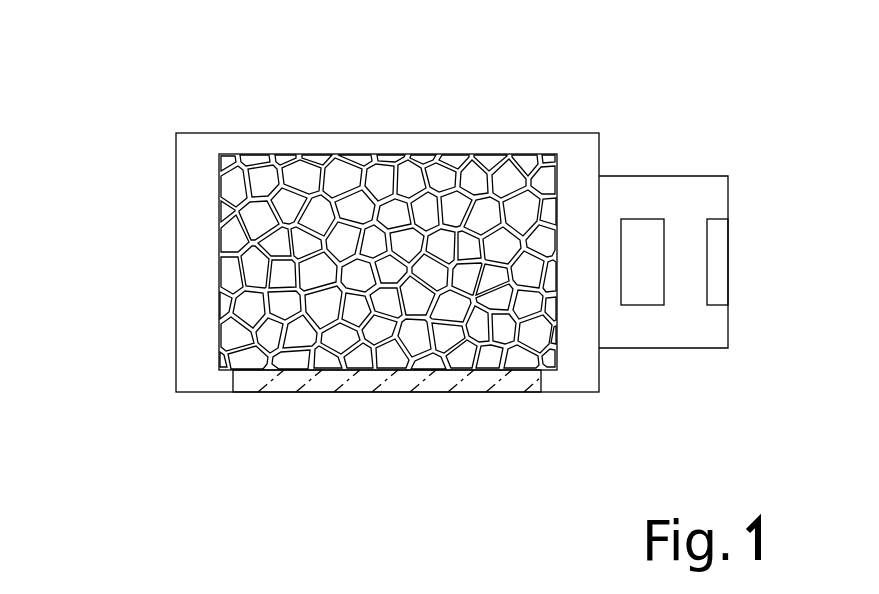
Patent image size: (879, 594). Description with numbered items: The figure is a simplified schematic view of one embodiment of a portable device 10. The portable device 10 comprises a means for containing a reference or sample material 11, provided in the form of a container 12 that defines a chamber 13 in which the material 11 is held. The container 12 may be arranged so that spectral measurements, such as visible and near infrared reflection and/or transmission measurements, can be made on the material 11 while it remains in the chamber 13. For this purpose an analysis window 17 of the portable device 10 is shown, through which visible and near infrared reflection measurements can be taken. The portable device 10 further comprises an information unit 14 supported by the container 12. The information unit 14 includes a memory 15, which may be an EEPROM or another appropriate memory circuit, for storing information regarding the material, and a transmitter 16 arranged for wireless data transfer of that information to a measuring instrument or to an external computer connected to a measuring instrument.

The portable device 10 is at (466, 106).
The reference or sample material 11 is at (373, 208).
The container 12 is at (176, 265).
The chamber 13 is at (388, 262).
The information unit 14 is at (657, 175).
The memory 15 is at (647, 305).
The transmitter 16 is at (720, 219).
The analysis window 17 is at (348, 393).